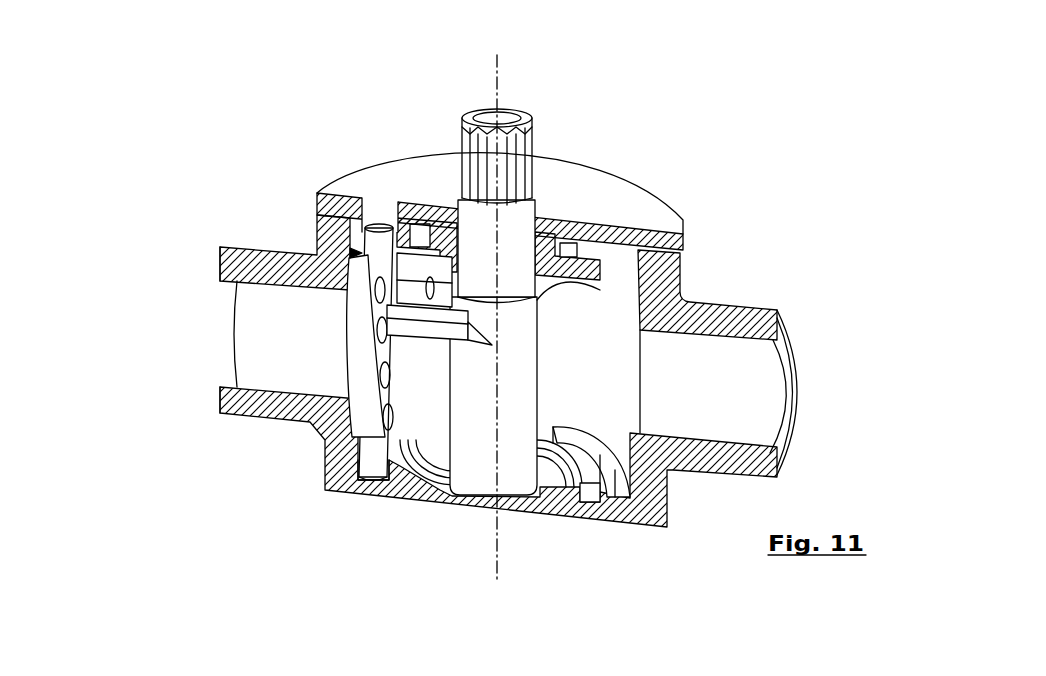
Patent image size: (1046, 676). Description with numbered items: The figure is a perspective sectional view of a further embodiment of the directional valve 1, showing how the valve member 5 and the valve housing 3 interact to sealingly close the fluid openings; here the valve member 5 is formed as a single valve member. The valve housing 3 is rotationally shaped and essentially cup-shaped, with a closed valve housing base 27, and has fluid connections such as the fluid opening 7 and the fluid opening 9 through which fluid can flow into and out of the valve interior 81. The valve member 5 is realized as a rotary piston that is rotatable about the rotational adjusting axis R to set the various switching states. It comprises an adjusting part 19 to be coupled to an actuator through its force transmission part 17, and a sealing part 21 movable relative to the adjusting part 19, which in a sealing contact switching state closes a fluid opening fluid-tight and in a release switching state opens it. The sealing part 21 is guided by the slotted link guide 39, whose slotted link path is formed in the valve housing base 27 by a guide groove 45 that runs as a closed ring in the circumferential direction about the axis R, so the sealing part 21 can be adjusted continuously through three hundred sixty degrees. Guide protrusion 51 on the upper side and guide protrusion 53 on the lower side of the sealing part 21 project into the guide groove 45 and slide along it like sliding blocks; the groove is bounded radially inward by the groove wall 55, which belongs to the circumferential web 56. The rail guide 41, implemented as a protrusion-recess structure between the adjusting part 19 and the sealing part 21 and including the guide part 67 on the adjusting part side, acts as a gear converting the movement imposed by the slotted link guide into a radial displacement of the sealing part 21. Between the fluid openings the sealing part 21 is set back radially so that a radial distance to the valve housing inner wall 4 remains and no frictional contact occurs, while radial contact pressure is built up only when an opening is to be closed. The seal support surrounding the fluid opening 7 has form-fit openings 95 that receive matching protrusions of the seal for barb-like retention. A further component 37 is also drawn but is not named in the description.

The directional valve 1 is at (665, 100).
The valve housing 3 is at (692, 268).
The valve housing inner wall 4 is at (610, 278).
The valve member 5 is at (288, 380).
The fluid opening 7 is at (250, 302).
The fluid opening 9 is at (545, 310).
The force transmission part 17 is at (537, 165).
The adjusting part 19 is at (515, 400).
The sealing part 21 is at (328, 462).
The valve housing base 27 is at (408, 478).
The seal 37 is at (517, 232).
The slotted link guide 39 is at (372, 247).
The rail guide 41 is at (436, 285).
The guide groove 45 is at (612, 497).
The guide protrusion 51 is at (328, 193).
The guide protrusion 53 is at (375, 470).
The radially inner groove wall 55 is at (775, 432).
The circumferential web 56 is at (572, 487).
The guide part 67 is at (420, 330).
The valve interior 81 is at (553, 352).
The form-fit opening 95 is at (387, 412).
The rotational adjusting axis R is at (500, 78).